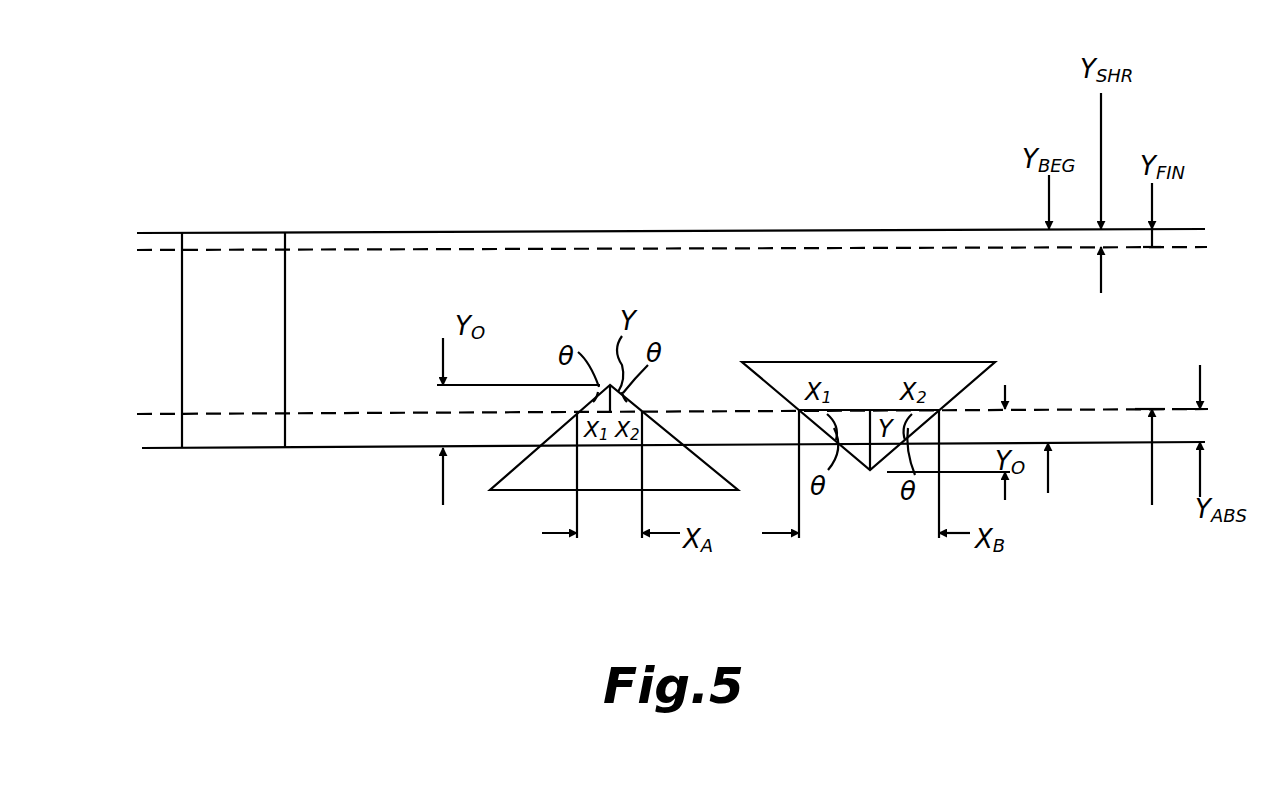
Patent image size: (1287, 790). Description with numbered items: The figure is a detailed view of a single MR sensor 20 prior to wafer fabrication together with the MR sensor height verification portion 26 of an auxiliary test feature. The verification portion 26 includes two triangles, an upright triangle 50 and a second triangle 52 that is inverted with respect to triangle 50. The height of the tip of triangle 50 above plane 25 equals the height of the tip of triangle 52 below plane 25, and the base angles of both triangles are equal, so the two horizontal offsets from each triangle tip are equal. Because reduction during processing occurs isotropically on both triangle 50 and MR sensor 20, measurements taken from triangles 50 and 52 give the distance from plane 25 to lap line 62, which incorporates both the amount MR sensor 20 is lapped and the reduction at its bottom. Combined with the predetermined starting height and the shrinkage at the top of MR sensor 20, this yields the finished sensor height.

The MR sensor 20 is at (232, 233).
The plane 25 is at (313, 450).
The MR sensor height verification portion 26 is at (606, 132).
The triangle 50 is at (523, 483).
The triangle 52 is at (856, 368).
The lap line 62 is at (412, 415).